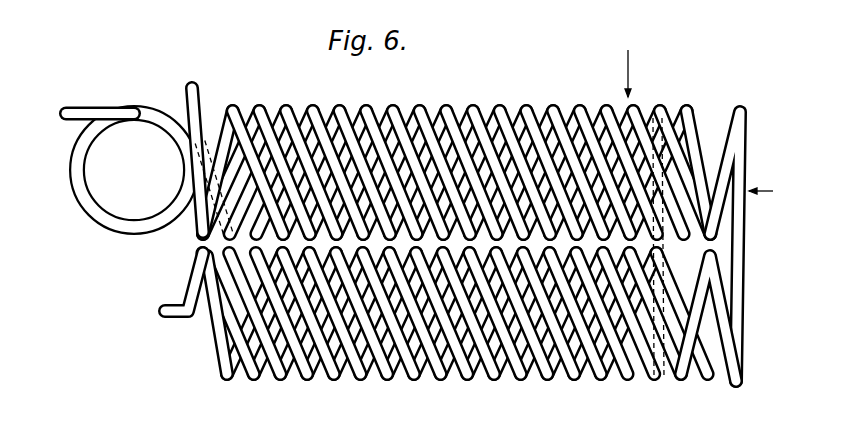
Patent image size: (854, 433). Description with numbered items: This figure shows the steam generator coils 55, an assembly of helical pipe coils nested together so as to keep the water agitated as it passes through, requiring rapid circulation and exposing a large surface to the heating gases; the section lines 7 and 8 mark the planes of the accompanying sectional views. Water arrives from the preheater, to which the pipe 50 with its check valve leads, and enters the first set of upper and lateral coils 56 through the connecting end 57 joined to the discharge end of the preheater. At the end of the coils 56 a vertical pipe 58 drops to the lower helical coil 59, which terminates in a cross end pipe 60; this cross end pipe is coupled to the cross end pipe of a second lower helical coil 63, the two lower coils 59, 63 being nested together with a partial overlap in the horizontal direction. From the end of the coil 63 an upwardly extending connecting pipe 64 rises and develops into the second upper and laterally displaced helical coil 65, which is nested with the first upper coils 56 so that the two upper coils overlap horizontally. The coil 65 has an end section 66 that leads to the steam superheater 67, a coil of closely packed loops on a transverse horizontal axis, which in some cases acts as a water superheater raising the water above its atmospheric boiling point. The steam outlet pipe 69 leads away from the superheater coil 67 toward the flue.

The section line 7- 7 is at (624, 72).
The section line 8- 8 is at (761, 178).
The pipe 50 is at (193, 95).
The steam generator coils 55 is at (458, 102).
The first set of upper and lateral coils 56 is at (686, 120).
The connecting end 57 is at (202, 132).
The vertical pipe 58 is at (734, 243).
The lower helical coil 59 is at (720, 372).
The cross end pipe 60 is at (163, 311).
The second lower helical coil 63 is at (212, 347).
The upwardly extending connecting pipe 64 is at (660, 248).
The second upper and laterally displaced helical coil 65 is at (245, 102).
The end section 66 is at (200, 212).
The steam superheater 67 is at (93, 203).
The steam outlet pipe 69 is at (84, 115).